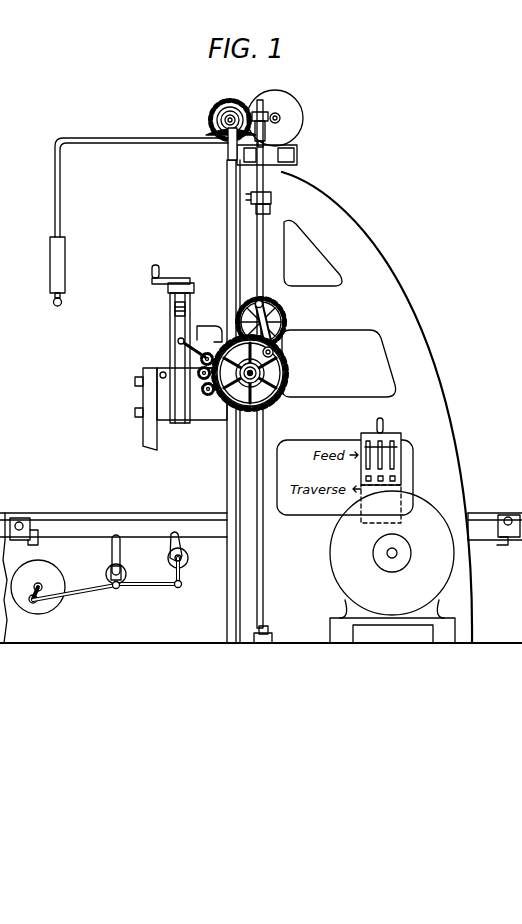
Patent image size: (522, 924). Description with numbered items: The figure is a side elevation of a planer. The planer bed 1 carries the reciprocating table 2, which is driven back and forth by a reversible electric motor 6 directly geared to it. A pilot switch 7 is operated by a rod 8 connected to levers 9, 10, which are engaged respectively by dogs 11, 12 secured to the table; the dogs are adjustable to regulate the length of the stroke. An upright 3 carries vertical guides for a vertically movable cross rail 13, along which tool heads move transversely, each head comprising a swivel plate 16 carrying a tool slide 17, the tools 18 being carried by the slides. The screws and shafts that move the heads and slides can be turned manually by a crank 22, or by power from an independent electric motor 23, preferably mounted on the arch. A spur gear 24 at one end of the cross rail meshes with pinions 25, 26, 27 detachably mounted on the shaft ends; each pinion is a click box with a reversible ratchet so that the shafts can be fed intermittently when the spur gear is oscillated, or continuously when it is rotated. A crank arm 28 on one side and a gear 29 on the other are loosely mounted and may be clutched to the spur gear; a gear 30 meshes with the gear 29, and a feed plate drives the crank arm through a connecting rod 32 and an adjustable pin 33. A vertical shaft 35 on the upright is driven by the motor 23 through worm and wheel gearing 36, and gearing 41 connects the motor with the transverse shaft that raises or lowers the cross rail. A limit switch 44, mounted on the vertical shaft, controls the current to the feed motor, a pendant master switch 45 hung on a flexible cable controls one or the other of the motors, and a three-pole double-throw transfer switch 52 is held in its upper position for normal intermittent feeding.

The planer bed 1 is at (497, 583).
The reciprocating table 2 is at (478, 513).
The upright or housing 3 is at (440, 400).
The reversible electric motor 6 is at (427, 508).
The pilot switch 7 is at (55, 575).
The rod 8 is at (88, 594).
The lever 9 is at (122, 558).
The lever 10 is at (178, 537).
The dog 11 is at (36, 523).
The dog 12 is at (497, 510).
The cross rail 13 is at (210, 418).
The swivel plate 16 is at (185, 420).
The tool slide 17 is at (170, 298).
The tool 18 is at (143, 435).
The crank 22 is at (178, 342).
The electric motor 23 is at (292, 112).
The spur gear 24 is at (287, 366).
The pinion 25 is at (210, 326).
The pinion 26 is at (204, 395).
The pinion 27 is at (203, 370).
The crank arm 28 is at (282, 380).
The gear 29 is at (268, 405).
The gear 30 is at (282, 302).
The connecting rod 32 is at (273, 350).
The adjustable pin 33 is at (262, 300).
The vertical shaft 35 is at (300, 160).
The worm and wheel gearing 36 is at (258, 112).
The gearing 41 is at (212, 112).
The limit switch 44 is at (271, 204).
The master switch 45 is at (50, 273).
The transfer switch 52 is at (400, 445).